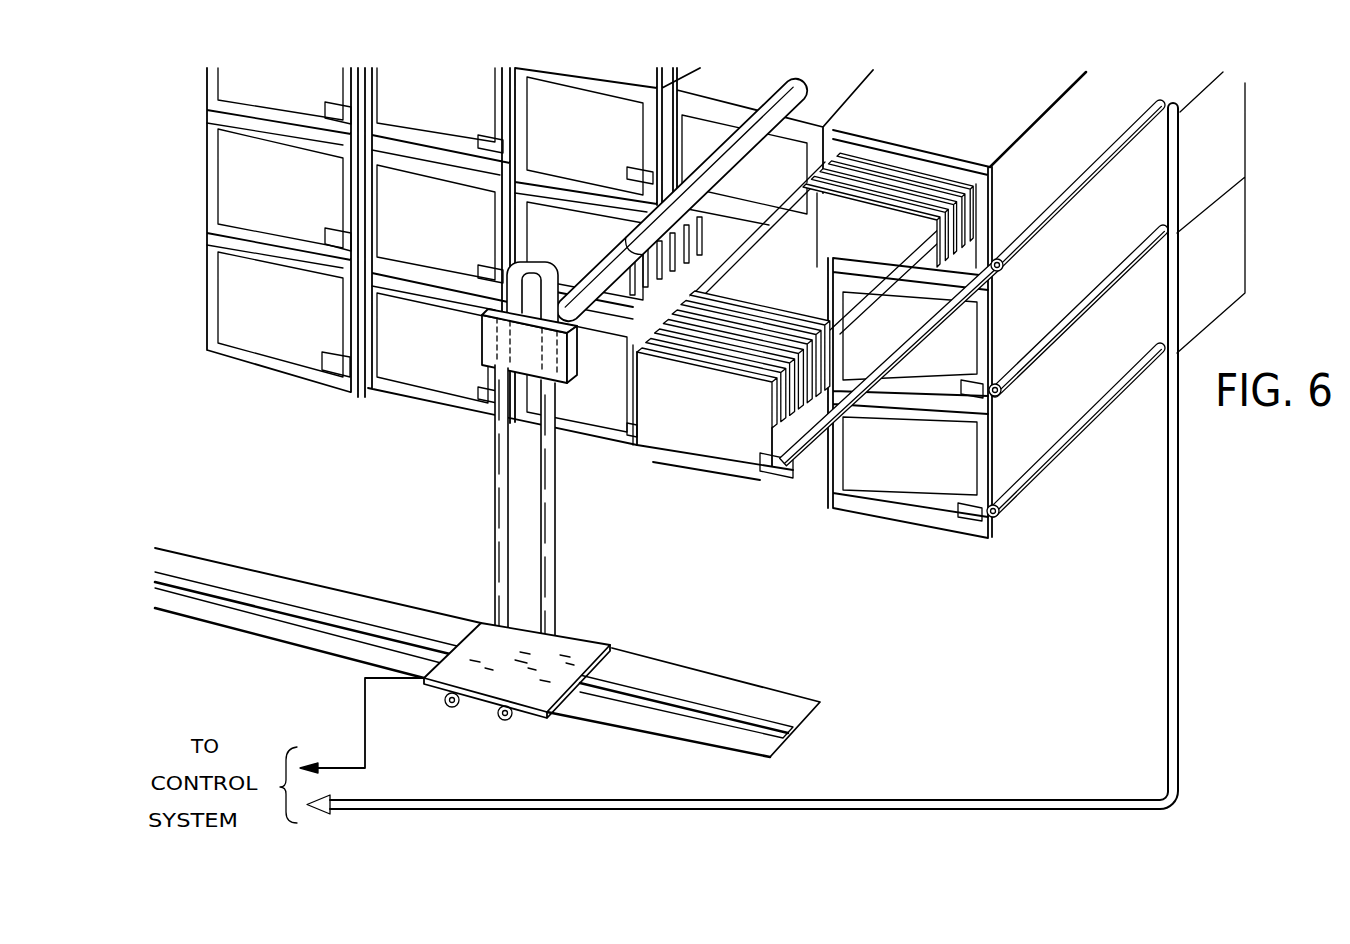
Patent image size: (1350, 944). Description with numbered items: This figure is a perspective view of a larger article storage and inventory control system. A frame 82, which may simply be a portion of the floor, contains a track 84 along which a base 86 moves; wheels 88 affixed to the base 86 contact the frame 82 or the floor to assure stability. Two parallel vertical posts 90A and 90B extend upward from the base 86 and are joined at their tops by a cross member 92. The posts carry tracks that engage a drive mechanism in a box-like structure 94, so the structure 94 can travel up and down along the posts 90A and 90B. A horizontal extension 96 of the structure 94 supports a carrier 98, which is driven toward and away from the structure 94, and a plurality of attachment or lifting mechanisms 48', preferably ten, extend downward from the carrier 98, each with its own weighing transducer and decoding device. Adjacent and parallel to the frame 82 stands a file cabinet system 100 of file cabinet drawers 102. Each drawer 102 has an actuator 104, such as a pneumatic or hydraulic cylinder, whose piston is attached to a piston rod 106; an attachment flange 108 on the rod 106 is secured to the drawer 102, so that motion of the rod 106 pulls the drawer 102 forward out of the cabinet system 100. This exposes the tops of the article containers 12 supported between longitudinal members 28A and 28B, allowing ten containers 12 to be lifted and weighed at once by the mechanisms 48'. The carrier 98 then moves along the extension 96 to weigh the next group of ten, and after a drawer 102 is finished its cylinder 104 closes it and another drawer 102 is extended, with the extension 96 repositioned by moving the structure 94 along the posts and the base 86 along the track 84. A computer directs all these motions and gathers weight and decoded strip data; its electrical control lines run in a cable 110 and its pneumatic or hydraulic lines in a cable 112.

The article container 12 is at (805, 290).
The longitudinal member 28A is at (776, 228).
The longitudinal member 28B is at (873, 285).
The attachment mechanism 48' is at (675, 256).
The frame 82 is at (727, 686).
The track 84 is at (777, 722).
The base 86 is at (583, 645).
The wheels 88 is at (505, 721).
The vertical post 90A is at (495, 509).
The vertical post 90B is at (553, 513).
The cross member 92 is at (540, 263).
The box-like structure 94 is at (484, 348).
The horizontal extension 96 is at (705, 168).
The carrier 98 is at (627, 238).
The file cabinet system 100 is at (336, 414).
The file cabinet drawer 102 is at (927, 454).
The actuator 104 is at (1083, 423).
The piston rod 106 is at (858, 415).
The attachment flange 108 is at (770, 474).
The cable 110 is at (341, 766).
The cable 112 is at (388, 798).